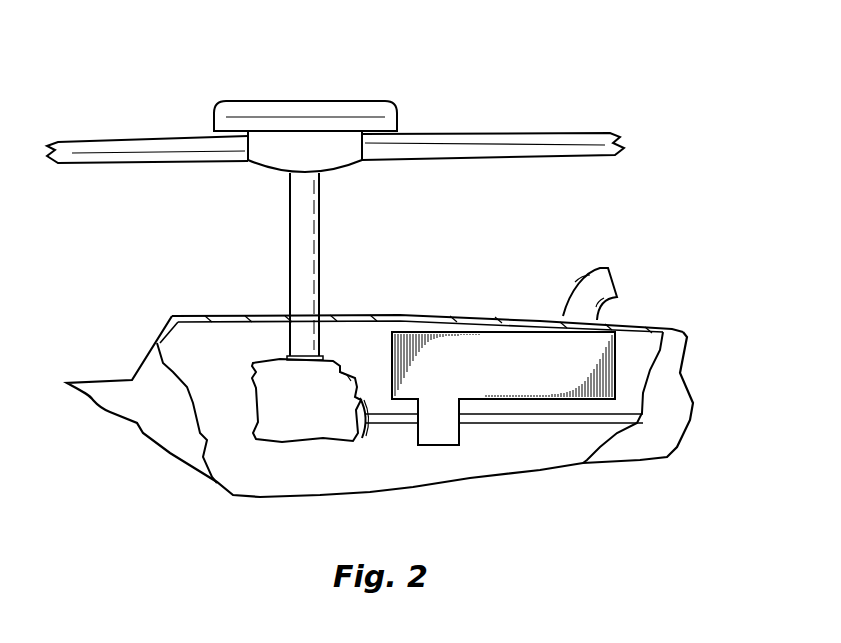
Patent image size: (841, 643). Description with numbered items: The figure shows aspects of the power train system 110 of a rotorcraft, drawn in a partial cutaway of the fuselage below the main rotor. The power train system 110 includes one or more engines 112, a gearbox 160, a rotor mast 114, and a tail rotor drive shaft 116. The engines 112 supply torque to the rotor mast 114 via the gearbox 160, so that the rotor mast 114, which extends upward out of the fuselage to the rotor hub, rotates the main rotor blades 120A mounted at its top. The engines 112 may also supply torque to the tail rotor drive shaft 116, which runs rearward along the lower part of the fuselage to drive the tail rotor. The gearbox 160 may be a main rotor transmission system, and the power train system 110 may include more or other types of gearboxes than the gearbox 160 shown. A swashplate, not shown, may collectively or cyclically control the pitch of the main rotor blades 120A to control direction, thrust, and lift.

The power train system 110 is at (299, 84).
The main rotor blades 120A is at (532, 134).
The rotor mast 114 is at (290, 260).
The engines 112 is at (520, 378).
The gearbox 160 is at (322, 418).
The tail rotor drive shaft 116 is at (503, 423).